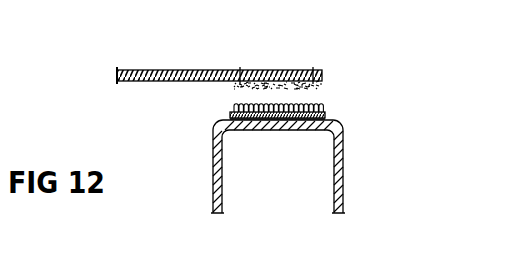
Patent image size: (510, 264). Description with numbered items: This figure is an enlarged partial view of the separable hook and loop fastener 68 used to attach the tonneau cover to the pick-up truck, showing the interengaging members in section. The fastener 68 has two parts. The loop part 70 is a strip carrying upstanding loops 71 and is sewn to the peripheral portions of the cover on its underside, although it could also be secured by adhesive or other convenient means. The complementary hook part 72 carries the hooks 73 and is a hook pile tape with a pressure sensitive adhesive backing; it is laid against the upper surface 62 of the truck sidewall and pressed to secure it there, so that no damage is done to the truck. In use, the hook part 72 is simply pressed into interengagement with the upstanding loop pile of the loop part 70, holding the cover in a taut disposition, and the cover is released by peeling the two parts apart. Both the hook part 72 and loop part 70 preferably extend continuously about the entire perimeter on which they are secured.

The upper surface 62 is at (213, 127).
The hook and loop fastener 68 is at (337, 105).
The loop part 70 is at (319, 66).
The upstanding loops 71 is at (236, 86).
The hook part 72 is at (334, 113).
The loop pile 73 is at (232, 105).